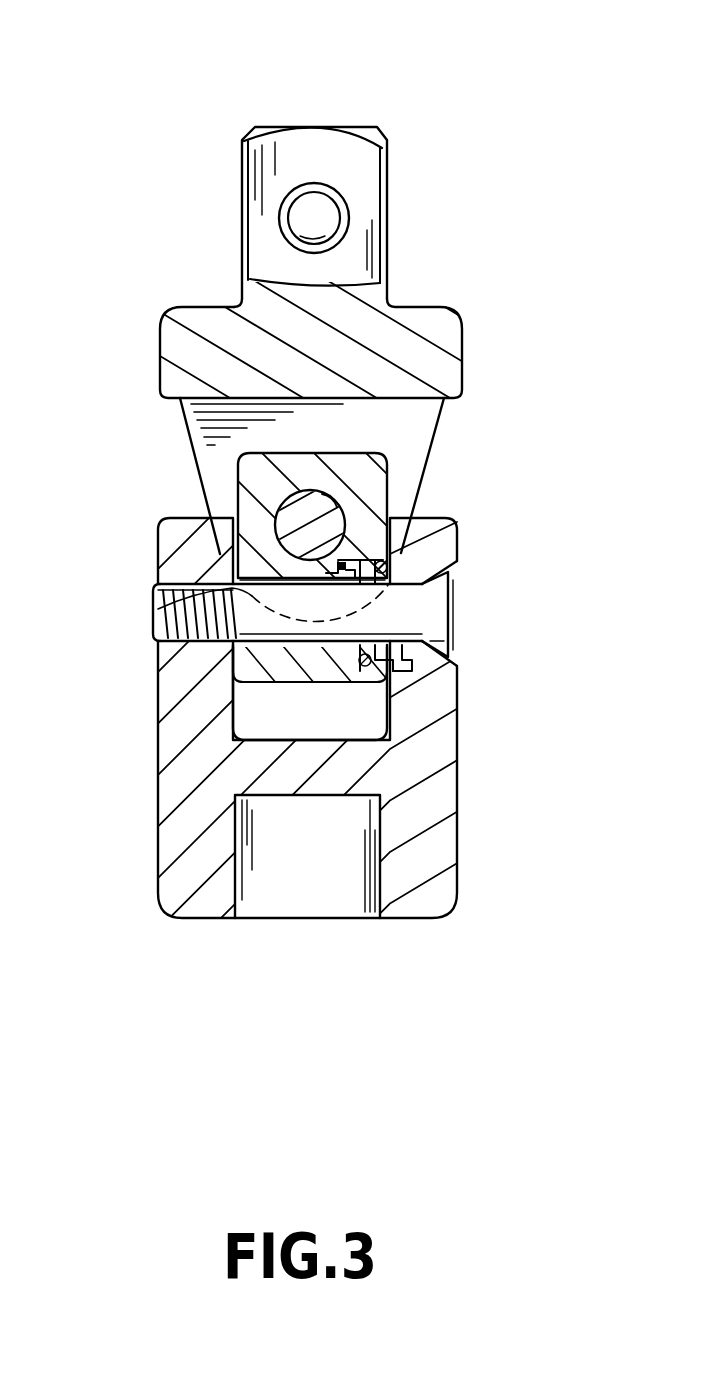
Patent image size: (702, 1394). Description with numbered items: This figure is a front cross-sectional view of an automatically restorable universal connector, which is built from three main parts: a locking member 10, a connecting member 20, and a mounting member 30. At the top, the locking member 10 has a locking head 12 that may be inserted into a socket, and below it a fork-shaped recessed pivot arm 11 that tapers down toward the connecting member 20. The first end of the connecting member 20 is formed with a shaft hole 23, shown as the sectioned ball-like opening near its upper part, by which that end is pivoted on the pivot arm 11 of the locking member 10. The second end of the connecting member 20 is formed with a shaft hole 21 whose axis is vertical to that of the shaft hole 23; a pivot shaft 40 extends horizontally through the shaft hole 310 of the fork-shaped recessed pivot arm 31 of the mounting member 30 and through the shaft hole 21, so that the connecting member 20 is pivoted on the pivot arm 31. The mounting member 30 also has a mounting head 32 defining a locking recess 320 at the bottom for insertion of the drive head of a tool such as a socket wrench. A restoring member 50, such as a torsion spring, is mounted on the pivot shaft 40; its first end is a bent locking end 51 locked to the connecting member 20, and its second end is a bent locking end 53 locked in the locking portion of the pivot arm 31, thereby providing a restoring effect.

The locking member 10 is at (410, 112).
The fork-shaped recessed pivot arm 11 is at (413, 457).
The locking head 12 is at (388, 176).
The connecting member 20 is at (238, 464).
The shaft hole 21 is at (160, 603).
The shaft hole 23 is at (333, 512).
The mounting member 30 is at (463, 833).
The fork-shaped recessed pivot arm 31 is at (440, 675).
The mounting head 32 is at (161, 851).
The shaft hole 310 is at (445, 581).
The locking recess 320 is at (328, 902).
The pivot shaft 40 is at (263, 650).
The restoring member 50 is at (388, 585).
The bent locking end 51 is at (338, 562).
The bent locking end 53 is at (409, 668).